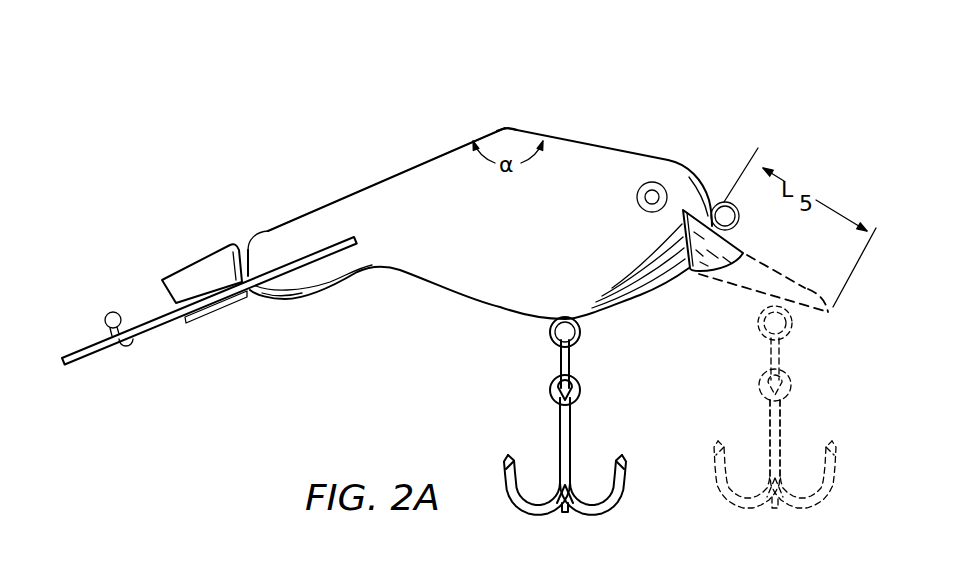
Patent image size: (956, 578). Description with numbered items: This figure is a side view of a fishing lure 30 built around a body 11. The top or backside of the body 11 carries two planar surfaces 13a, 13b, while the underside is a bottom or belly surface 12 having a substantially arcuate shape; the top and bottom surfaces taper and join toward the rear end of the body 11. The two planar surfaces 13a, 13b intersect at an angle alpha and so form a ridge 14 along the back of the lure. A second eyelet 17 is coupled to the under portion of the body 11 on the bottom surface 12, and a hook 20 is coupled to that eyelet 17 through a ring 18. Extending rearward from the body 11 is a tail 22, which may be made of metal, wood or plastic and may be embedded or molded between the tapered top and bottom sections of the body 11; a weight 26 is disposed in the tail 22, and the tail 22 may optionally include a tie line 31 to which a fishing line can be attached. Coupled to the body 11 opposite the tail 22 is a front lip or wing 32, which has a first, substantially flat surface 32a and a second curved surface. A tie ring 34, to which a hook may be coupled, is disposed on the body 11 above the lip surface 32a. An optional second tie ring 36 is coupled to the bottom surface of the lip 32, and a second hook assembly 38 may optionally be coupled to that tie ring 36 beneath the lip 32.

The lure 30 is at (205, 105).
The body 11 is at (702, 178).
The bottom surface 12 is at (636, 304).
The planar surface 13a is at (418, 167).
The planar surface 13b is at (587, 142).
The ridge 14 is at (507, 125).
The second eyelet 17 is at (549, 332).
The ring 18 is at (571, 360).
The hook 20 is at (560, 427).
The tail 22 is at (88, 347).
The weight 26 is at (187, 264).
The tie line 31 is at (110, 312).
The front lip 32 is at (808, 290).
The flat surface 32a is at (743, 248).
The tie ring 34 is at (740, 215).
The second tie ring 36 is at (790, 326).
The second hook assembly 38 is at (803, 418).